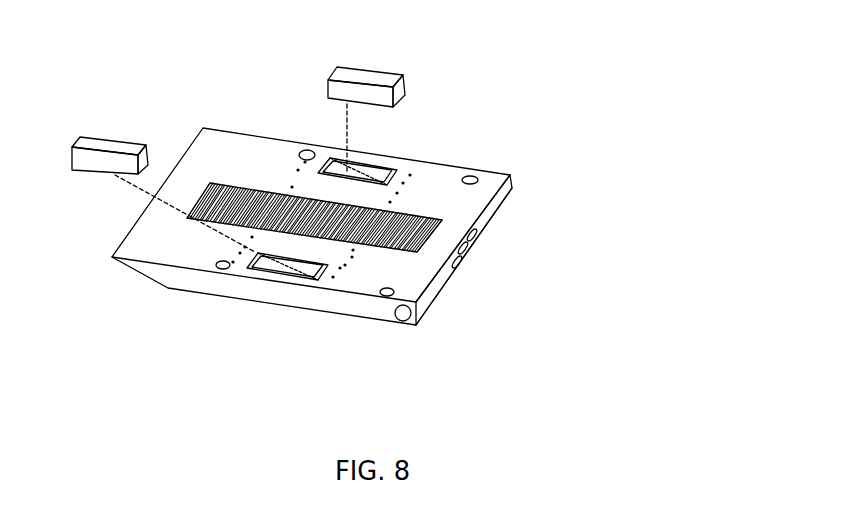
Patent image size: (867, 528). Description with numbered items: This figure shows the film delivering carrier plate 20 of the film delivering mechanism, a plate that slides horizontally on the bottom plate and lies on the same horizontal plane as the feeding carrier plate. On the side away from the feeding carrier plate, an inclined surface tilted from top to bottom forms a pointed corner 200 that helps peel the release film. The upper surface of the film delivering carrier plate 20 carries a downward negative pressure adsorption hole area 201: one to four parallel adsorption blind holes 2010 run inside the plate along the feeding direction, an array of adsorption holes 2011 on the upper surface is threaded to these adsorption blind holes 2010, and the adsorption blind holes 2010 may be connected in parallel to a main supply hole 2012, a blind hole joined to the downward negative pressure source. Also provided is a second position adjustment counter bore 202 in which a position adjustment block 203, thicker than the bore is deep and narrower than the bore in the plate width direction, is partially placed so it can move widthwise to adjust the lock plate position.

The film delivering carrier plate 20 is at (250, 152).
The pointed corner 200 is at (127, 260).
The downward negative pressure adsorption hole area 201 is at (534, 283).
The adsorption blind hole 2010 is at (455, 267).
The adsorption hole 2011 is at (438, 222).
The main supply hole 2012 is at (467, 348).
The second position adjustment counter bore 202 is at (360, 173).
The position adjustment block 203 is at (103, 140).